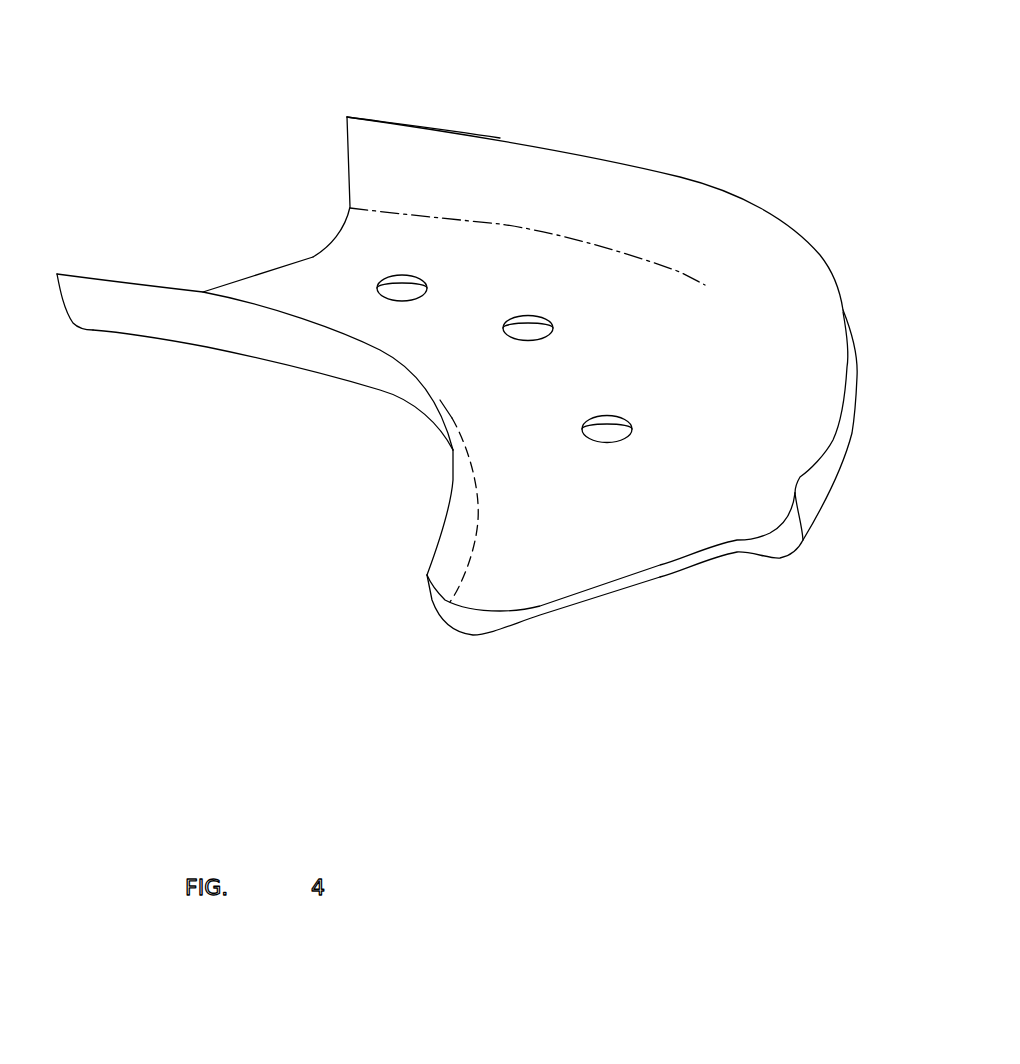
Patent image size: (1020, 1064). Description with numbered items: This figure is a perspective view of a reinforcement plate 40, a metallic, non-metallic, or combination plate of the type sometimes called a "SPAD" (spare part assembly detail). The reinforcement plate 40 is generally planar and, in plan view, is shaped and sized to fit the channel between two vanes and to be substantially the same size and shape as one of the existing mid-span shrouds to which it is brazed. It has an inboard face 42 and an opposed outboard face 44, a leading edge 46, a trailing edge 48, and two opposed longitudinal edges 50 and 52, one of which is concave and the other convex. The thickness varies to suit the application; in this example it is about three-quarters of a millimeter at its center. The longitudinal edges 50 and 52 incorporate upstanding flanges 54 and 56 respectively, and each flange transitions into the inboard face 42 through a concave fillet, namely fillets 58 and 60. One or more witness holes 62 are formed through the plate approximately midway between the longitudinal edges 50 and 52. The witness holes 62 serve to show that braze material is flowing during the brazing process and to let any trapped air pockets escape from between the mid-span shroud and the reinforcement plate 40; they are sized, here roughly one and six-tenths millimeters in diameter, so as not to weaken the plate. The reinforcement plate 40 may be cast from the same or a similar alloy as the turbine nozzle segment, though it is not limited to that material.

The reinforcement plate 40 is at (720, 78).
The inboard face 42 is at (540, 625).
The outboard face 44 is at (315, 266).
The leading edge 46 is at (660, 577).
The trailing edge 48 is at (252, 272).
The longitudinal edge 50 is at (208, 352).
The longitudinal edge 52 is at (757, 193).
The upstanding flange 54 is at (68, 272).
The upstanding flange 56 is at (465, 198).
The concave fillet 58 is at (430, 593).
The concave fillet 60 is at (535, 243).
The witness holes 62 is at (617, 440).